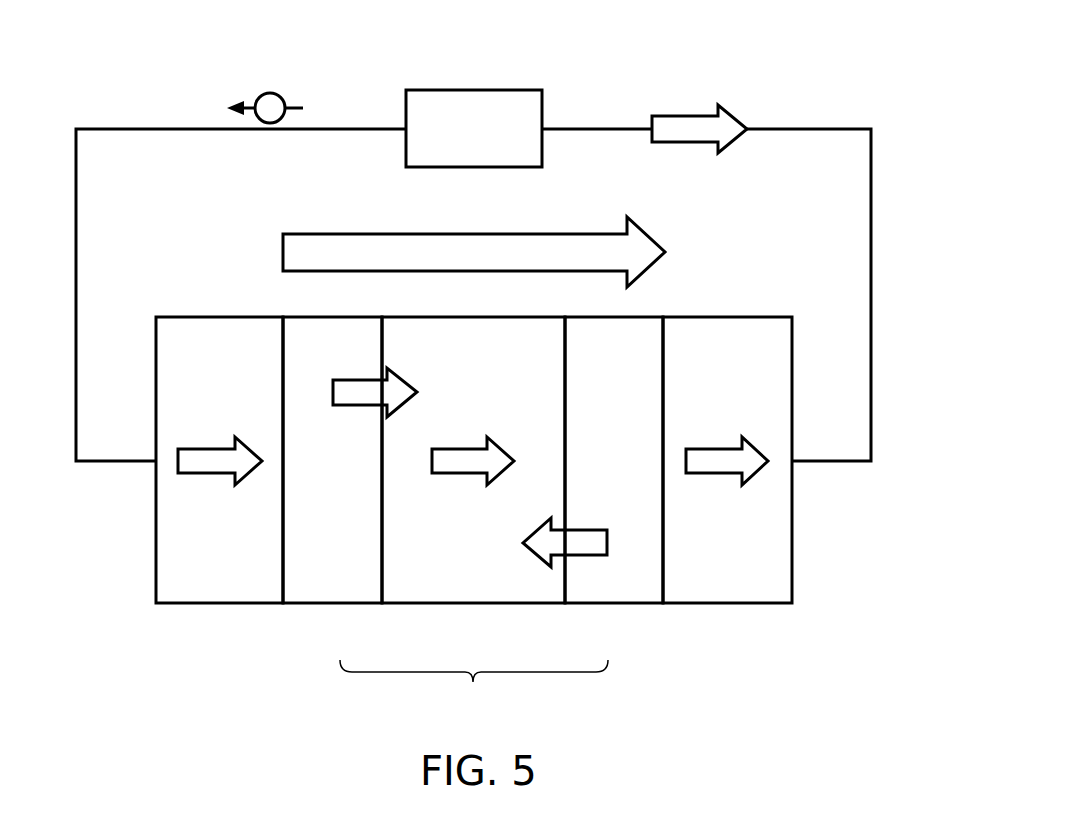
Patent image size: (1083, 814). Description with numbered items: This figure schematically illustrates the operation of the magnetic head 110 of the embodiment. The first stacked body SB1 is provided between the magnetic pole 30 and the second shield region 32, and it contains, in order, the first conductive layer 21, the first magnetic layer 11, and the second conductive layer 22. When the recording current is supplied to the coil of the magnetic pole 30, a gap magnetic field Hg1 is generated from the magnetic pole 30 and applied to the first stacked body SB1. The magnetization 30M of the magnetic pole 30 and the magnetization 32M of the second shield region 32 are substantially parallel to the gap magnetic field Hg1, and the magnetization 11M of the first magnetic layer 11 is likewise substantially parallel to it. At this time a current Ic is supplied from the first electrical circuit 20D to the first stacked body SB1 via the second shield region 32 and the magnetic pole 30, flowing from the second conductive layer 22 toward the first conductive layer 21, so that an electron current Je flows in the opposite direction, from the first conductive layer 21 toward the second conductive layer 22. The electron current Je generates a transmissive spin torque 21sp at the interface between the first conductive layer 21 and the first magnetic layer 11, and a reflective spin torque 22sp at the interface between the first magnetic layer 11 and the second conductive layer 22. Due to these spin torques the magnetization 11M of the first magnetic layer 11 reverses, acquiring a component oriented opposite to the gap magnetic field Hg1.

The thermoelectric system 110 is at (788, 71).
The first electrical circuit 20D is at (473, 103).
The electron current Je is at (270, 102).
The current Ic is at (690, 128).
The gap magnetic field Hg1 is at (472, 248).
The magnetic pole 30 is at (215, 338).
The magnetization of the magnetic pole 30M is at (208, 462).
The first conductive layer 21 is at (334, 577).
The spin torque 21sp is at (358, 390).
The first magnetic layer 11 is at (474, 577).
The magnetization of the first magnetic layer 11M is at (460, 462).
The second conductive layer 22 is at (609, 578).
The spin torque 22sp is at (585, 540).
The second shield region 32 is at (727, 338).
The magnetization of the second shield region 32M is at (712, 460).
The first stacked body SB1 is at (474, 689).